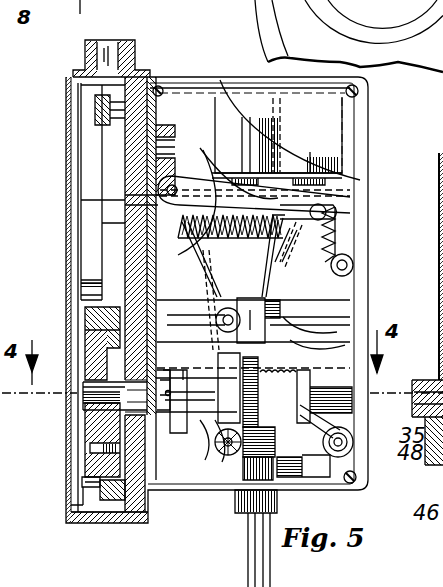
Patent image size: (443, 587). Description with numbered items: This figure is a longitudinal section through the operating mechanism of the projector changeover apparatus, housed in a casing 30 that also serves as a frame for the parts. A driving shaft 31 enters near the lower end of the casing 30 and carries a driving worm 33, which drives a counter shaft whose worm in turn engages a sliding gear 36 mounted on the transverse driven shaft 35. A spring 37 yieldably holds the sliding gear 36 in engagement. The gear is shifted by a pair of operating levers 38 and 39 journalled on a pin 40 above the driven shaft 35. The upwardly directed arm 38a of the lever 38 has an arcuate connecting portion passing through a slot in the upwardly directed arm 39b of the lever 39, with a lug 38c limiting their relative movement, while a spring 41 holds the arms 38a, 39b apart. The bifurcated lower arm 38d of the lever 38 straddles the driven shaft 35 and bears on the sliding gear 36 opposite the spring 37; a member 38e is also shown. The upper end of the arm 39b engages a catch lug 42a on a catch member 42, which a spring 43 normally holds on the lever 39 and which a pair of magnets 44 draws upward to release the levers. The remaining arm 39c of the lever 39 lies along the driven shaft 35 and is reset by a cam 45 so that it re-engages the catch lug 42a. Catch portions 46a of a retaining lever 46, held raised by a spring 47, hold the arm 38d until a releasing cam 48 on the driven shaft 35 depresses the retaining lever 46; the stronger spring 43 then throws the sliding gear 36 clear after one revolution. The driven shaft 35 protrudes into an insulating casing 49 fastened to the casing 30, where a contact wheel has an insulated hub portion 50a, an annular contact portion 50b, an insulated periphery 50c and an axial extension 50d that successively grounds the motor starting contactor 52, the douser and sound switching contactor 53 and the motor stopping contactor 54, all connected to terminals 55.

The casing 30 is at (200, 84).
The driving shaft 31 is at (245, 540).
The driving worm 33 is at (228, 457).
The driven shaft 35 is at (100, 385).
The sliding gear 36 is at (276, 433).
The spring 37 is at (348, 445).
The operating lever 38 is at (194, 262).
The upwardly directed arm 38a is at (137, 197).
The lug 38c is at (300, 256).
The lower arm 38d is at (210, 348).
The member 38e is at (200, 440).
The operating lever 39 is at (256, 256).
The upwardly directed arm 39b is at (299, 262).
The arm 39c is at (343, 340).
The pin 40 is at (245, 255).
The spring 41 is at (191, 182).
The catch member 42 is at (330, 205).
The catch lug 42a is at (317, 200).
The spring 43 is at (336, 240).
The magnets 44 is at (310, 162).
The cam 45 is at (317, 382).
The retaining lever 46 is at (313, 455).
The catch portions 46a is at (212, 440).
The spring 47 is at (250, 500).
The releasing cam 48 is at (120, 480).
The casing 49 is at (133, 72).
The insulated hub portion 50a is at (95, 407).
The annular contact portion 50b is at (110, 480).
The insulated periphery 50c is at (95, 478).
The axial extension 50d is at (88, 312).
The motor starting contactor 52 is at (83, 252).
The douser and sound switching contactor 53 is at (100, 480).
The motor stopping contactor 54 is at (85, 290).
The terminals 55 is at (100, 107).